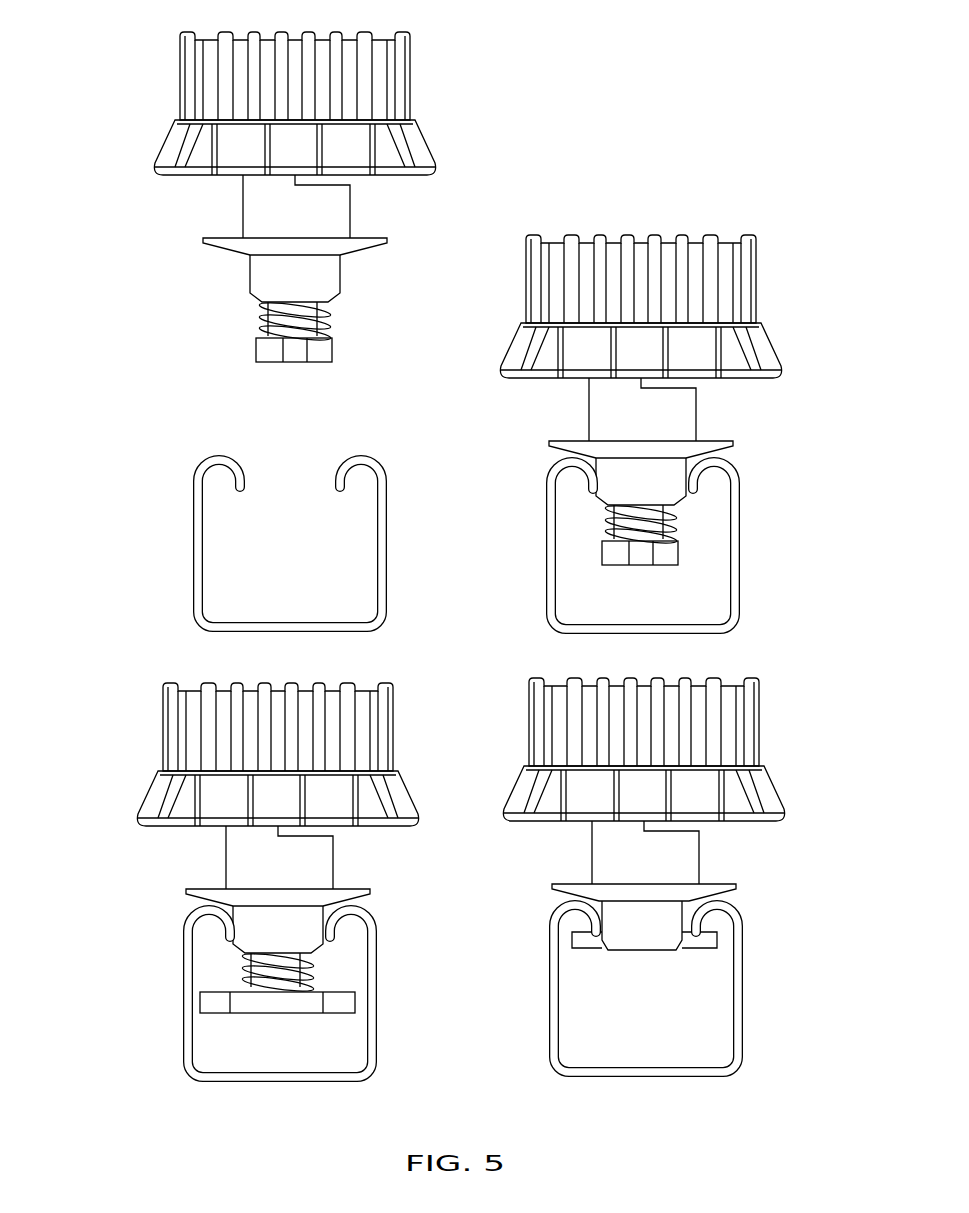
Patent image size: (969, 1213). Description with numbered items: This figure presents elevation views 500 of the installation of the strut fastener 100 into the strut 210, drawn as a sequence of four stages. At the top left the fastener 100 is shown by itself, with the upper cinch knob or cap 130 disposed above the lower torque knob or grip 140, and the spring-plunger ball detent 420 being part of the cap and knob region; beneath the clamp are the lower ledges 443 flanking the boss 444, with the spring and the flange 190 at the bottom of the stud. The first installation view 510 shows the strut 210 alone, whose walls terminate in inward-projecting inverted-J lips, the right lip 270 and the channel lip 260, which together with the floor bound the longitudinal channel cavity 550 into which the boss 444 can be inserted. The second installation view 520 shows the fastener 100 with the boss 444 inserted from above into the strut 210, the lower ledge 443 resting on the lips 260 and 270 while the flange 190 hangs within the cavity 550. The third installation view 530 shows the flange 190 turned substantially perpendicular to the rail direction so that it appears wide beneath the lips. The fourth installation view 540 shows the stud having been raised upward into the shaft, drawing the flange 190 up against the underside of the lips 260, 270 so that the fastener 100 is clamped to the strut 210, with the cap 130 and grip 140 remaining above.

The strut fastener 100 is at (122, 18).
The spring-plunger ball detent 420 is at (482, 35).
The elevation views 500 is at (567, 61).
The lower ledges 443 is at (222, 263).
The boss 444 is at (342, 280).
The first installation view 510 is at (379, 436).
The strut 210 is at (184, 553).
The right lip 270 is at (211, 455).
The channel lip 260 is at (373, 457).
The longitudinal channel cavity 550 is at (306, 560).
The second installation view 520 is at (807, 256).
The flange 190 is at (603, 559).
The third installation view 530 is at (427, 691).
The fourth installation view 540 is at (790, 689).
The cap 130 is at (761, 731).
The grip 140 is at (775, 785).